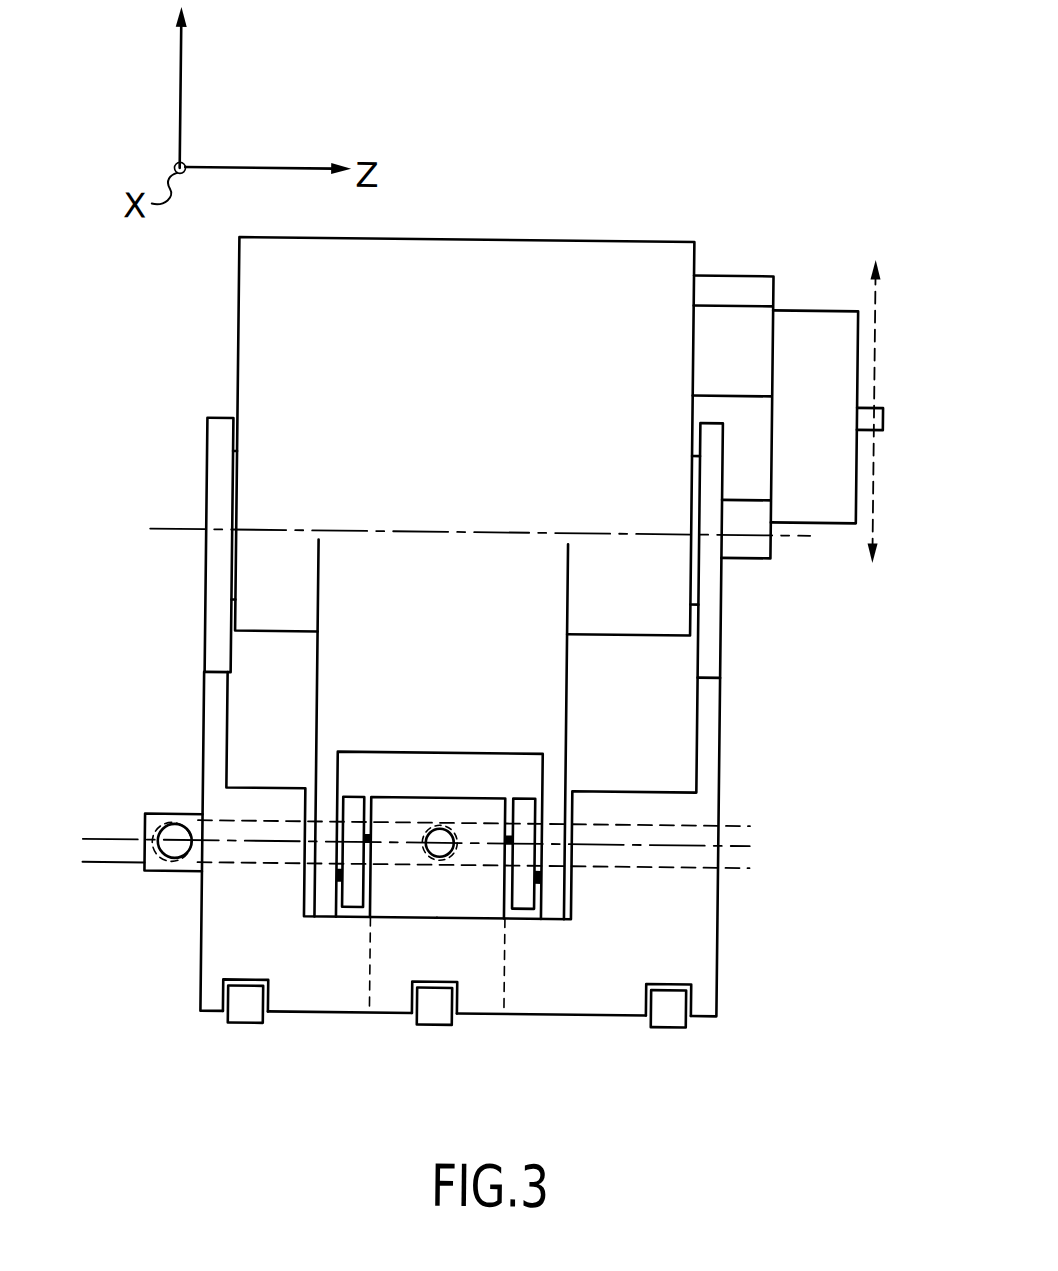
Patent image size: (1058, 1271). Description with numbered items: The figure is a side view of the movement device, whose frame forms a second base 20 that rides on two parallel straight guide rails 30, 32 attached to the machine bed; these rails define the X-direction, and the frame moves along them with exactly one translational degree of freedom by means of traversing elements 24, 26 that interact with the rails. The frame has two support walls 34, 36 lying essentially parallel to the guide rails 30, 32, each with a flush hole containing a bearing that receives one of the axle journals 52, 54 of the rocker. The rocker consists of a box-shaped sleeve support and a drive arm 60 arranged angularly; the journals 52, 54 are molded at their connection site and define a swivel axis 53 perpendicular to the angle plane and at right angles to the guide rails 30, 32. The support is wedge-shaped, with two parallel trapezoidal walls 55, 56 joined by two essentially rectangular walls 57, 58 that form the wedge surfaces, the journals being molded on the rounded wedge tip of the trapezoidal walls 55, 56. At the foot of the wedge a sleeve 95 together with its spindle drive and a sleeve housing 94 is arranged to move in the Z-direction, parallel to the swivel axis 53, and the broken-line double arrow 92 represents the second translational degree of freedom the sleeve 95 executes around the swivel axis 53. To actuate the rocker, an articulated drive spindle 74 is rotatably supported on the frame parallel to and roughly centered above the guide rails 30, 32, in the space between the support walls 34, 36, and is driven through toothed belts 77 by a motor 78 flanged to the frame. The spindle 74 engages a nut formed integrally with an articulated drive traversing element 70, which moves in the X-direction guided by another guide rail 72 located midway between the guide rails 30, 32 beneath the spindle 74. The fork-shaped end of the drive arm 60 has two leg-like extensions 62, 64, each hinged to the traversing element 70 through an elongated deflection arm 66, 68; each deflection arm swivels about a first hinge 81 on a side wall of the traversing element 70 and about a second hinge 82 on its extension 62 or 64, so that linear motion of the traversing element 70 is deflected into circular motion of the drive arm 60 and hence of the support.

The second base part 20 is at (172, 732).
The traversing element 24 is at (699, 967).
The traversing elements 26 is at (204, 949).
The guide rail 30 is at (672, 1015).
The guide rail 32 is at (245, 1012).
The front support wall 34 is at (721, 658).
The support wall 36 is at (204, 672).
The axle journal 52 is at (721, 586).
The swivel axis 53 is at (344, 531).
The axle journal 54 is at (231, 524).
The trapezoidal wall 55 is at (702, 230).
The trapezoidal wall 56 is at (222, 378).
The rectangular wall 57 is at (352, 357).
The rectangular wall 58 is at (660, 570).
The drive arm 60 is at (382, 698).
The leg-like extension 62 is at (555, 815).
The leg-like extension 64 is at (342, 879).
The first deflection arm 66 is at (528, 860).
The second deflection arm 68 is at (357, 906).
The articulated drive traversing element 70 is at (468, 896).
The other guide rail 72 is at (441, 1013).
The articulated drive spindle 74 is at (441, 852).
The toothed belts 77 is at (245, 825).
The motor 78 is at (160, 826).
The first hinge 81 is at (513, 838).
The second hinge 82 is at (341, 878).
The double arrow 92 is at (872, 301).
The sleeve housing 94 is at (777, 290).
The sleeve 95 is at (881, 411).